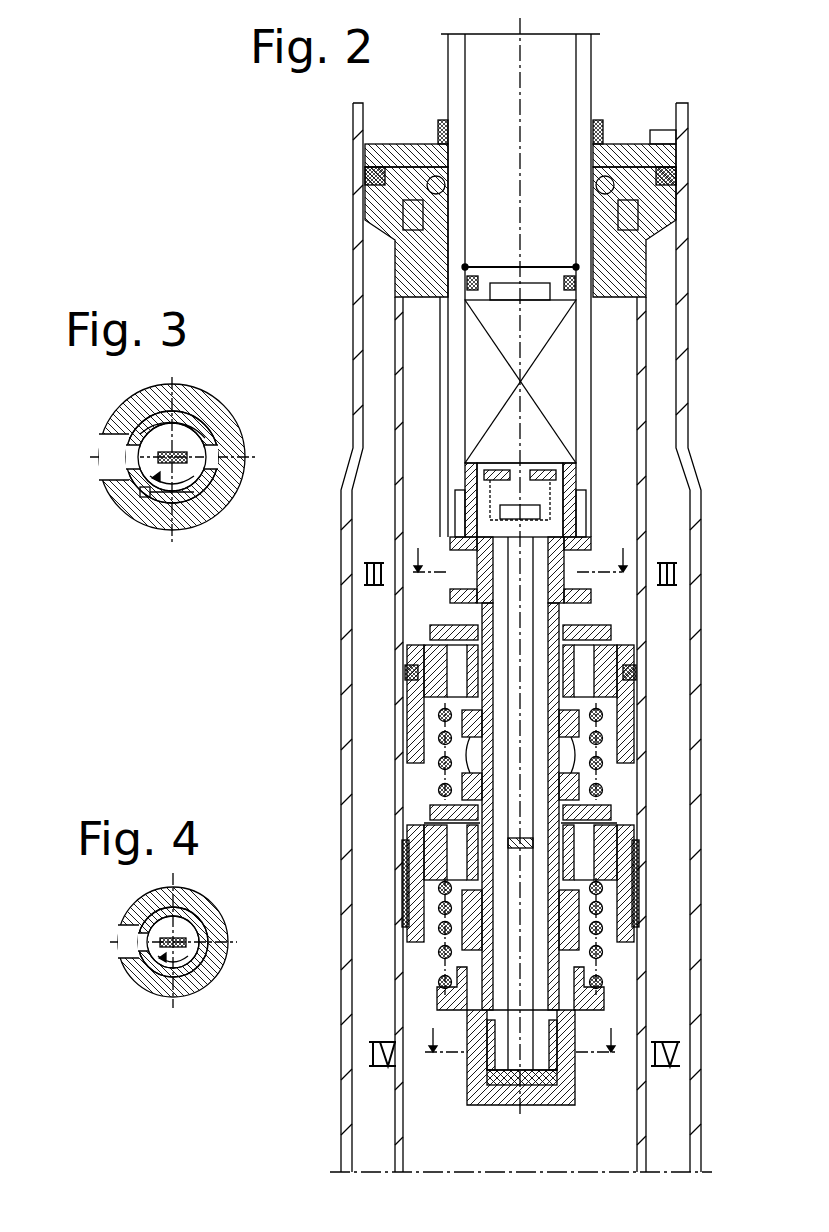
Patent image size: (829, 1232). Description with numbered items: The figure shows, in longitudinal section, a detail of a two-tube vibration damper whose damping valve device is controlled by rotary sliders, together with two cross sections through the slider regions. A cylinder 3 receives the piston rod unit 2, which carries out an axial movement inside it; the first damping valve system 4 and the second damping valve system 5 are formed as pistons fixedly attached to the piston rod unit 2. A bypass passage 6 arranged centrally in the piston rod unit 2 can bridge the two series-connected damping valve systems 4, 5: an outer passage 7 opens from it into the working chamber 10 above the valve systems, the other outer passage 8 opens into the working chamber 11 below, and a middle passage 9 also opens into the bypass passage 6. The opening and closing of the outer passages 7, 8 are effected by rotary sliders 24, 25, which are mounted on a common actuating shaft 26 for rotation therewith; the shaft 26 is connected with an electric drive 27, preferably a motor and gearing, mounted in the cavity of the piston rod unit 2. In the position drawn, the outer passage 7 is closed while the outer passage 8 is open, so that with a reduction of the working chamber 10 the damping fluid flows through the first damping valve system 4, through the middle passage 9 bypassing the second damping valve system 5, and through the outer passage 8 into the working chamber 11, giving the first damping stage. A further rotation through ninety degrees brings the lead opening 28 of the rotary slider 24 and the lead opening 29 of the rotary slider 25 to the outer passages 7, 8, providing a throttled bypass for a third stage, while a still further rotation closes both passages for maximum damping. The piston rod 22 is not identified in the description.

In FIG. 2, the piston rod unit 2 is at (583, 303).
In FIG. 3, the piston rod unit 2 is at (185, 522).
In FIG. 2, the cylinder 3 is at (640, 418).
In FIG. 2, the first damping valve system 4 is at (598, 692).
In FIG. 2, the second damping valve system 5 is at (600, 855).
In FIG. 2, the bypass passage 6 is at (543, 618).
In FIG. 3, the bypass passage 6 is at (148, 488).
In FIG. 2, the outer passage 7 is at (470, 580).
In FIG. 3, the outer passage 7 is at (115, 467).
In FIG. 2, the outer passage 8 is at (477, 1060).
In FIG. 4, the outer passage 8 is at (125, 947).
In FIG. 2, the middle passage 9 is at (605, 765).
In FIG. 2, the working chamber 10 is at (610, 467).
In FIG. 2, the working chamber 11 is at (600, 1127).
In FIG. 2, the piston rod 22 is at (553, 98).
In FIG. 2, the rotary slider 24 is at (578, 548).
In FIG. 3, the rotary slider 24 is at (212, 438).
In FIG. 2, the rotary slider 25 is at (555, 1025).
In FIG. 4, the rotary slider 25 is at (197, 918).
In FIG. 2, the actuating shaft 26 is at (517, 719).
In FIG. 3, the actuating shaft 26 is at (178, 447).
In FIG. 2, the electric drive 27 is at (557, 377).
In FIG. 3, the lead opening 28 is at (232, 482).
In FIG. 4, the lead opening 29 is at (205, 943).